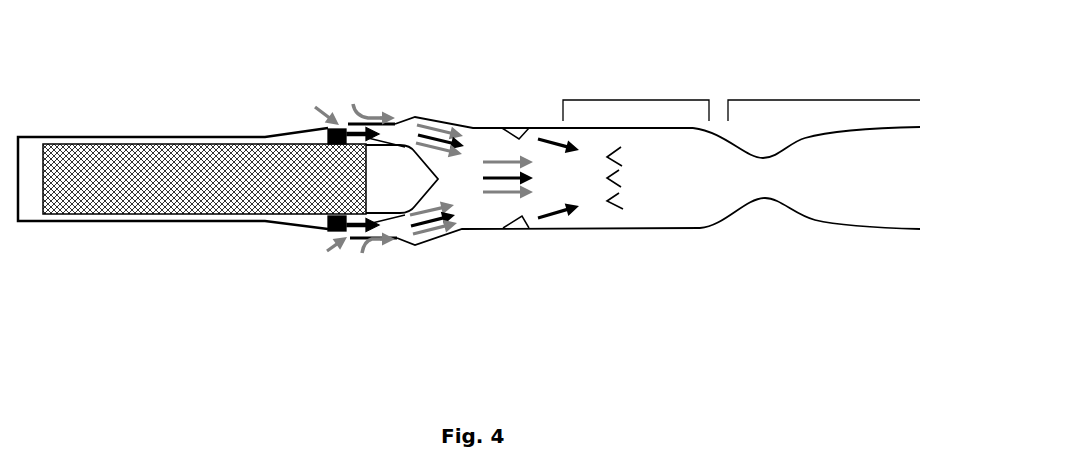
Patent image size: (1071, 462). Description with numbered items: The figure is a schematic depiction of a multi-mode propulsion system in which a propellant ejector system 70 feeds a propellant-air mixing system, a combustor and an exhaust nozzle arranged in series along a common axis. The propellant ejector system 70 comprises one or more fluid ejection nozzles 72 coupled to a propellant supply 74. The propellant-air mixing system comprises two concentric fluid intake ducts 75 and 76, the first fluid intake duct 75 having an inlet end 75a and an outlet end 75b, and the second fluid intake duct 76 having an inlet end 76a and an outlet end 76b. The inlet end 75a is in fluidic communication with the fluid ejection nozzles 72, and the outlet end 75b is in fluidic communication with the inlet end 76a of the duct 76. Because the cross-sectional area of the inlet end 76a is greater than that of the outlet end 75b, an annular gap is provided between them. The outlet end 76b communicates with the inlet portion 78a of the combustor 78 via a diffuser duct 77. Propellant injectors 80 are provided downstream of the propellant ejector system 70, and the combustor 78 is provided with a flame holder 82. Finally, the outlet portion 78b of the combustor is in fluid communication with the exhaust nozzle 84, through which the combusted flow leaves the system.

The propellant ejector system 70 is at (381, 203).
The fluid ejection nozzles 72 is at (328, 230).
The propellant supply 74 is at (68, 183).
The fluid intake duct 75 is at (364, 69).
The inlet end 75a is at (349, 122).
The outlet end 75b is at (397, 121).
The fluid intake duct 76 is at (406, 314).
The inlet end 76a is at (400, 247).
The outlet end 76b is at (417, 247).
The diffuser duct 77 is at (440, 238).
The combustor 78 is at (643, 100).
The inlet portion of the combustor 78a is at (474, 126).
The outlet portion of the combustor 78b is at (733, 217).
The propellant injectors 80 is at (522, 216).
The flame holder 82 is at (620, 175).
The exhaust nozzle 84 is at (823, 100).